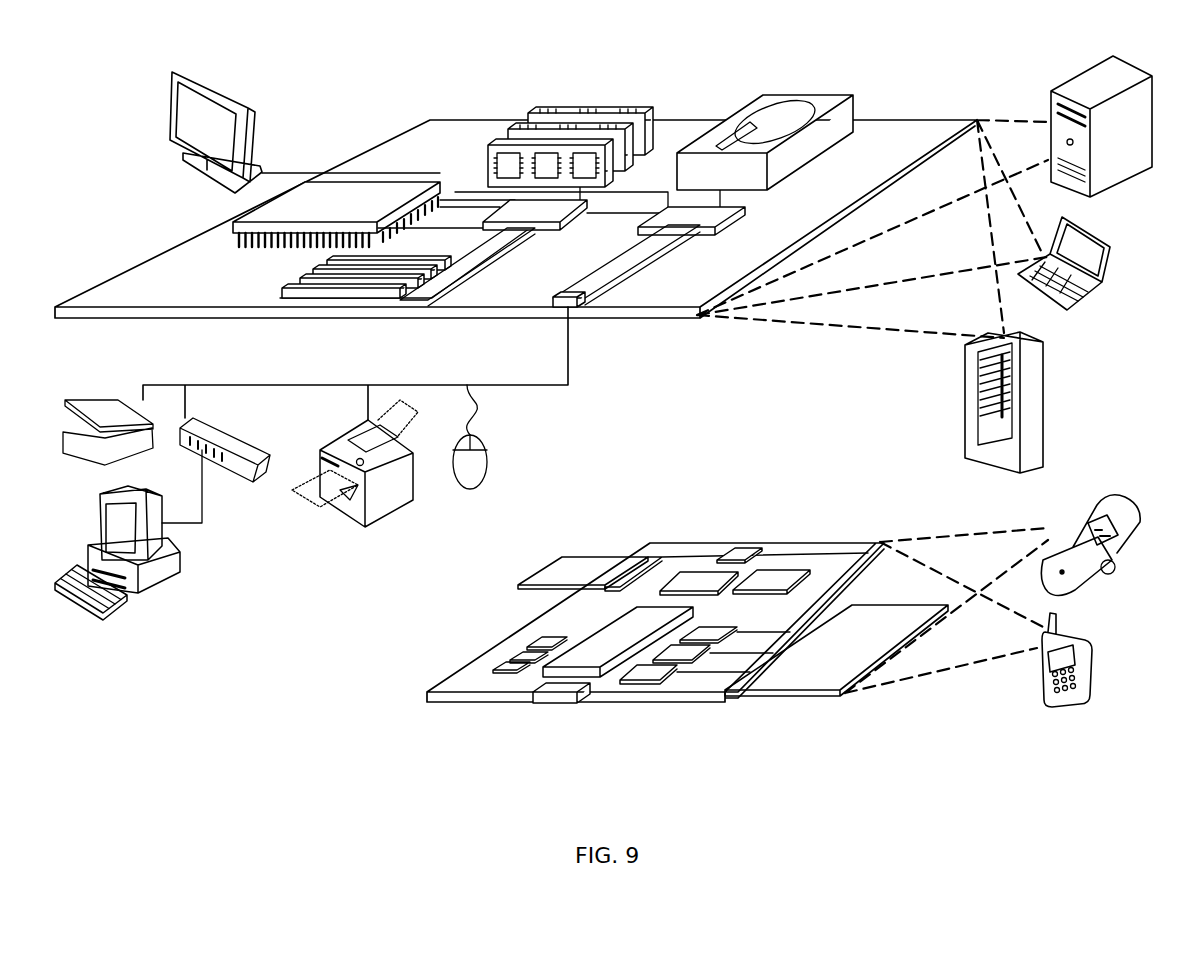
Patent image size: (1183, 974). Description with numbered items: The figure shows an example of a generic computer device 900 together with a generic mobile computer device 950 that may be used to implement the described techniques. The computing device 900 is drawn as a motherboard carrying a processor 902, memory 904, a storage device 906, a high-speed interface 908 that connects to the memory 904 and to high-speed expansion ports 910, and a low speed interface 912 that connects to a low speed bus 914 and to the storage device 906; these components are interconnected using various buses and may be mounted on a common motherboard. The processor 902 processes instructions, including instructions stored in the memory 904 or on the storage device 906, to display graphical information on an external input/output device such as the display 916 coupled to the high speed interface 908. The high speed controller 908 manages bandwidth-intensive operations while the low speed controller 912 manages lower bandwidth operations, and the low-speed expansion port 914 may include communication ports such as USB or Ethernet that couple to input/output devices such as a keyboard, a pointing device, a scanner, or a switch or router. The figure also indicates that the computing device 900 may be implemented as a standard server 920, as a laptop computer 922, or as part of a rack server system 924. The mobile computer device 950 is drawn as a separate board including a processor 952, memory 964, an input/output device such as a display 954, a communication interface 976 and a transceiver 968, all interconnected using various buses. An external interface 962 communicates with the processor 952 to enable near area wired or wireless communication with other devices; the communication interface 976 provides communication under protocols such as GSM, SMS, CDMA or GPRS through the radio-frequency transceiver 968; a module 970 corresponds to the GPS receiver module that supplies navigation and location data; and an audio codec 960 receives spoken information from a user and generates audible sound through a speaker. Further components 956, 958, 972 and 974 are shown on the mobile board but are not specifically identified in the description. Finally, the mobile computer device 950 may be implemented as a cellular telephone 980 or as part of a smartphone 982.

The computing device 900 is at (340, 95).
The processor 902 is at (236, 228).
The memory 904 is at (533, 90).
The storage device 906 is at (755, 104).
The high-speed interface 908 is at (500, 204).
The high-speed expansion ports 910 is at (292, 283).
The low speed interface 912 is at (668, 212).
The low speed bus 914 is at (582, 306).
The display 916 is at (172, 74).
The standard server 920 is at (1050, 106).
The laptop computer 922 is at (1110, 244).
The rack server system 924 is at (968, 424).
The mobile computer device 950 is at (409, 696).
The processor 952 is at (592, 676).
The display 954 is at (812, 682).
The memory 956 is at (660, 680).
The input/output device 958 is at (700, 655).
The audio codec 960 is at (707, 638).
The external interface 962 is at (556, 700).
The memory 964 is at (510, 655).
The transceiver 968 is at (775, 578).
The GPS receiver module 970 is at (752, 556).
The communication interface 972 is at (632, 558).
The audio codec 974 is at (565, 558).
The communication interface 976 is at (695, 575).
The cellular telephone 980 is at (1098, 508).
The smartphone 982 is at (1043, 664).